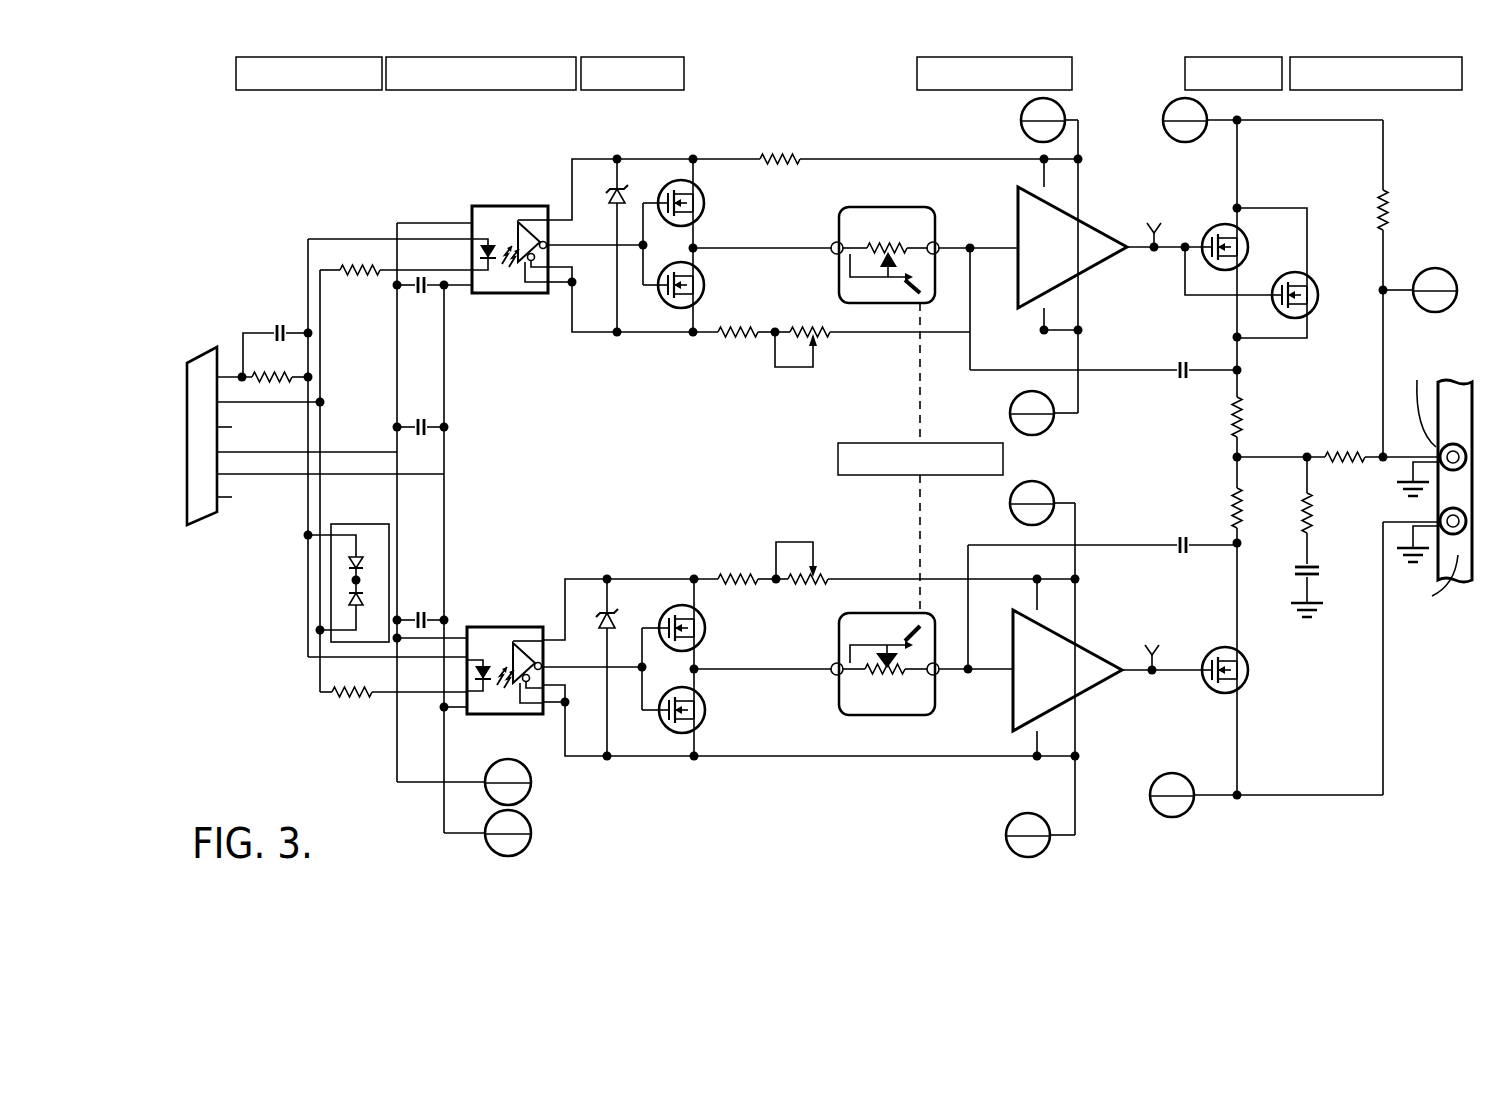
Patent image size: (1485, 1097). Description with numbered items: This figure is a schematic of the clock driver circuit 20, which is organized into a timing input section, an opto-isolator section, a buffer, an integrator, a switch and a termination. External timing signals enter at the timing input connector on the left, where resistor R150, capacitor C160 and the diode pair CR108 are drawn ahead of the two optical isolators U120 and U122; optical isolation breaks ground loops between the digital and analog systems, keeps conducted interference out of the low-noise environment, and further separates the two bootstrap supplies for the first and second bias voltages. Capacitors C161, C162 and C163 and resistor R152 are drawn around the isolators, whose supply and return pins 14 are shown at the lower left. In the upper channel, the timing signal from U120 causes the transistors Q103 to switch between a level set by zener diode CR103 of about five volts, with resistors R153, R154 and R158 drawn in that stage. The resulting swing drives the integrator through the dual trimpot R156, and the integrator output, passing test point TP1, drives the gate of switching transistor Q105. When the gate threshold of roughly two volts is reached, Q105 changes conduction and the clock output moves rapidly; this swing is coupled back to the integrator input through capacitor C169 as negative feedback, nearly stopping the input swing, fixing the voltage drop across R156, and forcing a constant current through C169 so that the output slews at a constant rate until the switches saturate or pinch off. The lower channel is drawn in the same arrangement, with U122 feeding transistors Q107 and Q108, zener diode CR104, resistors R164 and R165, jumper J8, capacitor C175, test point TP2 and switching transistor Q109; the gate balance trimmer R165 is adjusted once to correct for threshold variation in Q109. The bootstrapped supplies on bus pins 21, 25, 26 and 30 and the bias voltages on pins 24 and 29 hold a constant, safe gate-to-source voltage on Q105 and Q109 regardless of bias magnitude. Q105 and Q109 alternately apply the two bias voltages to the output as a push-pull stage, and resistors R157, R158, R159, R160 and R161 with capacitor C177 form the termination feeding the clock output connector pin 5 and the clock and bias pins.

The clock driver circuit 20 is at (260, 176).
The power connector A pin 14 (+5VT / TRTN) 14 is at (464, 807).
The connector B pin 21 (REGHI_1) 21 is at (1049, 120).
The connector B pin 24 (VBIAS_1) 24 is at (1185, 120).
The connector B pin 25 (REGLO_1) 25 is at (1044, 413).
The connector B pin 26 (REGHI_2) 26 is at (1042, 503).
The connector B pin 29 (VBIAS_2) 29 is at (1266, 795).
The connector B pin 30 (REGLO_2) 30 is at (1040, 835).
The connector J pin 5 (VCLK_1) 5 is at (1420, 290).
The resistor R150 is at (270, 363).
The resistor R152 is at (356, 705).
The resistor R153 is at (781, 144).
The resistor R154 is at (743, 318).
The dual-trimpot R156 is at (885, 255).
The resistor R157 is at (1206, 417).
The resistor R158 is at (1008, 413).
The resistor R159 is at (1338, 441).
The resistor R160 is at (1342, 510).
The resistor R161 is at (1415, 288).
The resistor R164 is at (725, 561).
The gate balance trimmer R165 is at (800, 593).
The capacitor C160 is at (275, 334).
The capacitor C161 is at (434, 302).
The capacitor C162 is at (423, 410).
The capacitor C163 is at (423, 603).
The feedback capacitor C169 is at (1103, 354).
The capacitor C175 is at (1102, 559).
The capacitor C177 is at (1335, 588).
The zener diode CR103 is at (612, 185).
The zener diode CR104 is at (619, 610).
The diode pair CR108 is at (348, 562).
The transistor Q103 is at (707, 245).
The switching transistor Q105 is at (1277, 268).
The transistor Q107 is at (706, 644).
The transistor Q108 is at (705, 712).
The switching transistor Q109 is at (1244, 669).
The optical isolator U120 is at (497, 242).
The optical isolator U122 is at (507, 660).
The jumper J8 is at (805, 575).
The test point TP1 is at (1146, 216).
The test point TP2 is at (1146, 644).